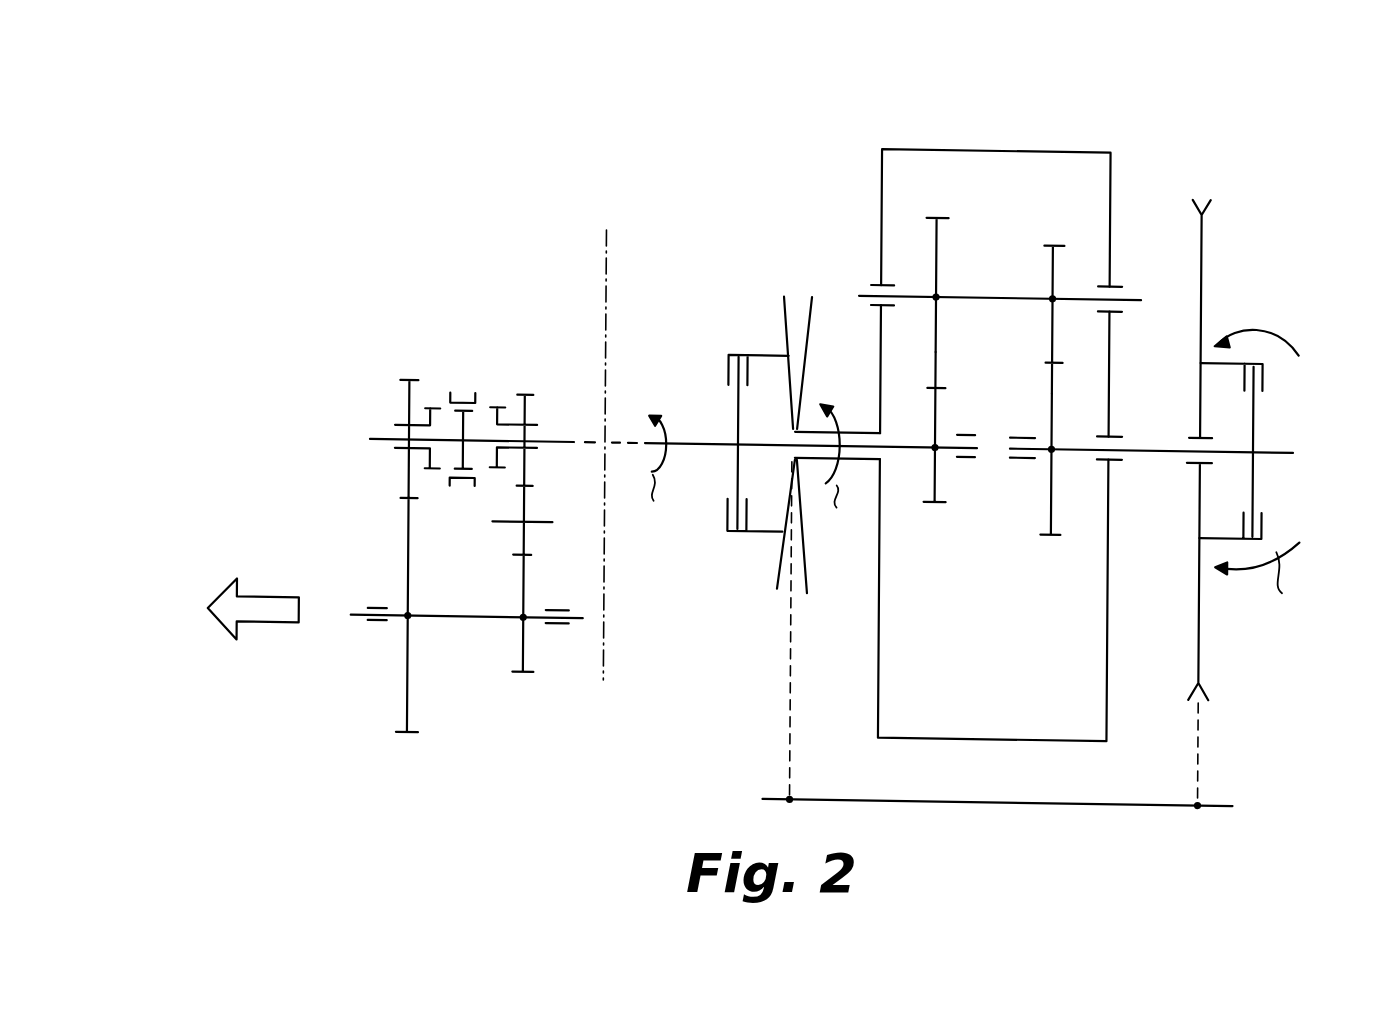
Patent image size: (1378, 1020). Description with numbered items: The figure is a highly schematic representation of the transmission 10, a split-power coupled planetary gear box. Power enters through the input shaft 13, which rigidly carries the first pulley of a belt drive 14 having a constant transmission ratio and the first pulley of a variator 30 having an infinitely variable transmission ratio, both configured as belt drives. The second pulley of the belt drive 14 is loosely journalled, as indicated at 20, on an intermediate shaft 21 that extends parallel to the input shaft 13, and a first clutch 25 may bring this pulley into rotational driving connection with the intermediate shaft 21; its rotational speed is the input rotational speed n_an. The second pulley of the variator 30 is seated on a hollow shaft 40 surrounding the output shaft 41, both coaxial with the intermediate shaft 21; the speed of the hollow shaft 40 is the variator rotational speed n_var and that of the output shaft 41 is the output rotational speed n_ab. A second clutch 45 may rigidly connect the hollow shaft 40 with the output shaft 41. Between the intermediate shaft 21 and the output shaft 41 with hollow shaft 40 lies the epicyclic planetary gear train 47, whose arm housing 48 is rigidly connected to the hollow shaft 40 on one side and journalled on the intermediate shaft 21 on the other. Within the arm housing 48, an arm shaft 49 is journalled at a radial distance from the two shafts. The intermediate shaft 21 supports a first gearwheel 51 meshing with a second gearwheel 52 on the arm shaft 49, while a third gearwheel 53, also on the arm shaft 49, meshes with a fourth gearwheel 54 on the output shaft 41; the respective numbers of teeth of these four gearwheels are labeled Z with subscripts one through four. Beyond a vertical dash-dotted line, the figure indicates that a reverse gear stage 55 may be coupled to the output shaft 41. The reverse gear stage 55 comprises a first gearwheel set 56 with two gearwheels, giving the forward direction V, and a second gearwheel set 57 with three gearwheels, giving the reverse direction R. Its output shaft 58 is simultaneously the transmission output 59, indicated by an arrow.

The transmission 10 is at (773, 160).
The input shaft 13 is at (1218, 797).
The belt drive 14 is at (1209, 268).
The loose journalling 20 is at (1190, 458).
The intermediate shaft 21 is at (1156, 435).
The first clutch 25 is at (1262, 372).
The variator 30 is at (770, 573).
The hollow shaft 40 is at (857, 418).
The output shaft 41 is at (688, 442).
The second clutch 45 is at (728, 356).
The epicyclic planetary gear train 47 is at (943, 147).
The arm housing 48 is at (1012, 147).
The arm shaft 49 is at (995, 296).
The first gearwheel 51 is at (1053, 476).
The second gearwheel 52 is at (1052, 266).
The third gearwheel 53 is at (936, 241).
The fourth gearwheel 54 is at (937, 468).
The reverse gear stage 55 is at (462, 348).
The first gearwheel set 56 is at (403, 749).
The second gearwheel set 57 is at (522, 682).
The output shaft of reverse gear stage 58 is at (463, 621).
The transmission output 59 is at (273, 630).